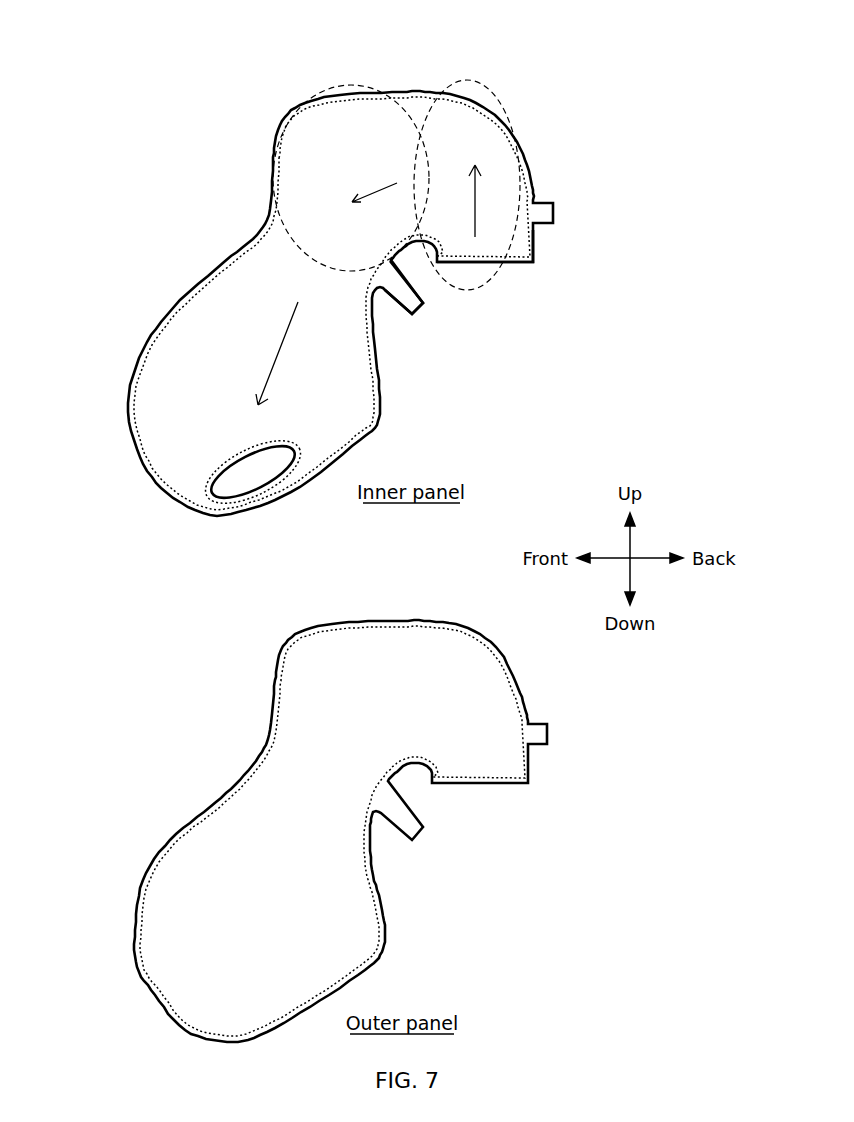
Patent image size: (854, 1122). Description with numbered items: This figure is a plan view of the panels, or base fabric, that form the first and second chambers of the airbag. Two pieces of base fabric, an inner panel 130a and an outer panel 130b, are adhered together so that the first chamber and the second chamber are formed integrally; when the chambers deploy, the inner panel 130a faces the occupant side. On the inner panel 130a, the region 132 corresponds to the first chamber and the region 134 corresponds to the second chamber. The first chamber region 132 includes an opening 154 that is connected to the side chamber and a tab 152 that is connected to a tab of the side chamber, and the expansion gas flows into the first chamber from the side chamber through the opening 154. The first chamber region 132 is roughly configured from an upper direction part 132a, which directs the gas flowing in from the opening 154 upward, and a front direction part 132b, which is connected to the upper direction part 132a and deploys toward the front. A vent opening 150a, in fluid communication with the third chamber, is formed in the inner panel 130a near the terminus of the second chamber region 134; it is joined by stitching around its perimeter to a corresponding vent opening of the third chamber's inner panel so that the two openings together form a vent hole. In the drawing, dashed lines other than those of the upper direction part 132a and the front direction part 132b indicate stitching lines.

The inner panel 130a is at (306, 295).
The outer panel 130b is at (215, 771).
The region corresponding to the first chamber 132 is at (404, 153).
The upper direction part 132a is at (473, 73).
The front direction part 132b is at (300, 93).
The region corresponding to the second chamber 134 is at (153, 386).
The vent opening 150a is at (248, 482).
The tab 152 is at (415, 315).
The opening 154 is at (517, 263).